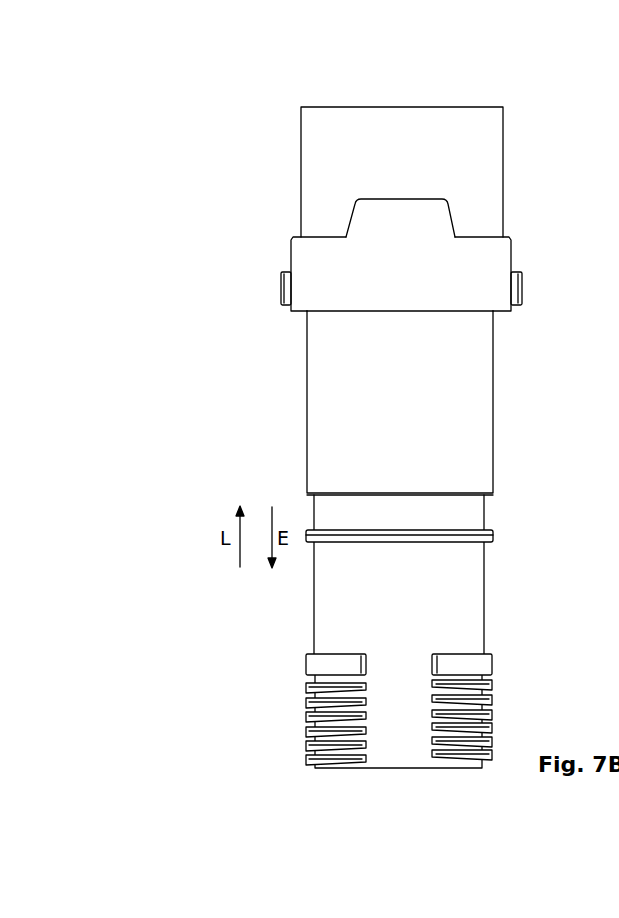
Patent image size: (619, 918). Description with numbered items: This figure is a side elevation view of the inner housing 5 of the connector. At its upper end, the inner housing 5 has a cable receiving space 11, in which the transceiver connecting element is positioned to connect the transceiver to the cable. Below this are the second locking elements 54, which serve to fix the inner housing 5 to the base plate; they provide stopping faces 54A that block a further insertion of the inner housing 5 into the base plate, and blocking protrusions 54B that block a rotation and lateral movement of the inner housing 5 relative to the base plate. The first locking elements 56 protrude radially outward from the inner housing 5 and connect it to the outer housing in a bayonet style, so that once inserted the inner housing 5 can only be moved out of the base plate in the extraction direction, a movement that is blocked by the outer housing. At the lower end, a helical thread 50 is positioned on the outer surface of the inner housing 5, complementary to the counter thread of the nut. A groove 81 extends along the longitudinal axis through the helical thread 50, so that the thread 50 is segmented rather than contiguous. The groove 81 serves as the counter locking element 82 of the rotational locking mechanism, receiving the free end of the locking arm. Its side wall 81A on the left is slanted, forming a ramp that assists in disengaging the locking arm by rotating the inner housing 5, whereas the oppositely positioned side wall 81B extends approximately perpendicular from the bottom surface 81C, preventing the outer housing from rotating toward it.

The cable receiving space 11 is at (398, 100).
The second locking elements 54 is at (401, 192).
The stopping faces 54A is at (483, 224).
The blocking protrusions 54B is at (420, 235).
The first locking elements 56 is at (280, 288).
The inner housing 5 is at (407, 368).
The helical thread 50 is at (500, 699).
The groove 81 is at (408, 717).
The side wall 81A is at (362, 658).
The side wall 81B is at (427, 658).
The bottom surface 81C is at (417, 681).
The counter locking element 82 is at (408, 758).